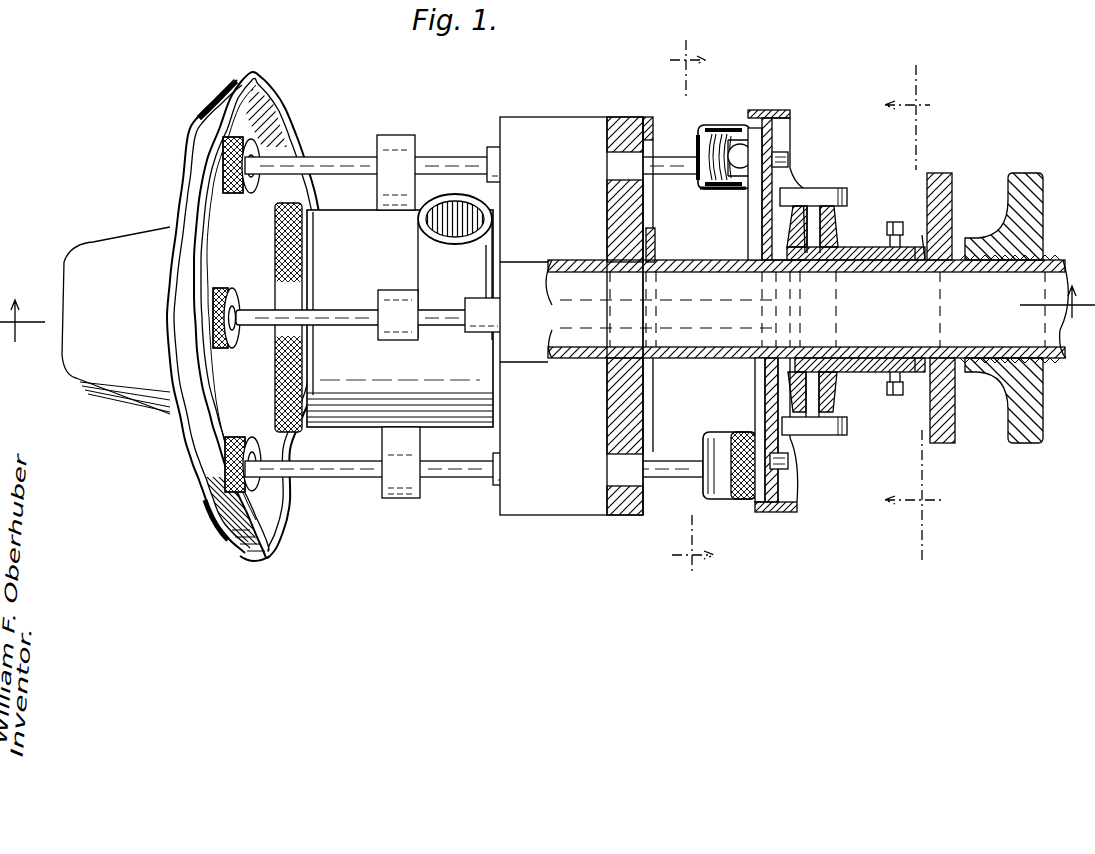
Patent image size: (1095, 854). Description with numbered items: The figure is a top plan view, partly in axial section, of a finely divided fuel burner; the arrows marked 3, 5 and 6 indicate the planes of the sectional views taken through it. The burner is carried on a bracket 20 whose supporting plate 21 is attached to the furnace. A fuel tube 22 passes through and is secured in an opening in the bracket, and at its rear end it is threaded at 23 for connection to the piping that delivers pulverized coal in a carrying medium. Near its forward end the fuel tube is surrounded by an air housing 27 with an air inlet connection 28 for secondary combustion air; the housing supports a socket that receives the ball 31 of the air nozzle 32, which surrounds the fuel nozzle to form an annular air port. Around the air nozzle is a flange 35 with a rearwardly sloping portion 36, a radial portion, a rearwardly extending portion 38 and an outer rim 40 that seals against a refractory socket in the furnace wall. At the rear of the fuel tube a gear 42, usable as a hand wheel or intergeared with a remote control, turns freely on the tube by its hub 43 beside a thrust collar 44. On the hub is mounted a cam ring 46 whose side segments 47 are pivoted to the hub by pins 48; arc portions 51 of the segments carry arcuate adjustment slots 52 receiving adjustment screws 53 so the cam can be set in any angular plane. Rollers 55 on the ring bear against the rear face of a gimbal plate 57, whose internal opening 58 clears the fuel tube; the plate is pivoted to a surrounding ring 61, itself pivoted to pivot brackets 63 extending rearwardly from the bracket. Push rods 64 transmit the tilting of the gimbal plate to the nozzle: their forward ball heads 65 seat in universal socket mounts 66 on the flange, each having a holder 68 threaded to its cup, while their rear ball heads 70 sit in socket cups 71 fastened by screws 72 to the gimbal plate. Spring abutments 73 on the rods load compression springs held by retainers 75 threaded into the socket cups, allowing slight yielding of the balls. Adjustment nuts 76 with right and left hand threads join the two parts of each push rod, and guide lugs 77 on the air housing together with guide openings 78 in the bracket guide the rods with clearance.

The section line 3- 3 is at (547, 324).
The section line 5- 5 is at (709, 307).
The section line 6- 6 is at (929, 312).
The bracket 20 is at (612, 122).
The supporting plate 21 is at (543, 120).
The fuel tube 22 is at (581, 262).
The threaded end 23 is at (1046, 258).
The air housing 27 is at (400, 318).
The air inlet connection 28 is at (492, 221).
The ball 31 is at (248, 284).
The air nozzle 32 is at (93, 244).
The flange 35 is at (200, 458).
The rearwardly sloping portion 36 is at (188, 420).
The rearwardly extending portion 38 is at (216, 532).
The outer rim 40 is at (250, 563).
The gear 42 is at (935, 176).
The hub 43 is at (899, 397).
The thrust collar 44 is at (1028, 444).
The ring 46 is at (836, 432).
The side segments 47 is at (838, 378).
The pins 48 is at (812, 252).
The arc portions 51 is at (864, 242).
The arcuate adjustment slots 52 is at (918, 232).
The adjustment screws 53 is at (880, 392).
The rollers 55 is at (822, 197).
The gimbal plate 57 is at (768, 391).
The internal opening 58 is at (766, 364).
The ring 61 is at (786, 513).
The pivot brackets 63 is at (680, 430).
The push rods 64 is at (330, 160).
The ball heads 65 is at (260, 168).
The universal socket mounts 66 is at (255, 140).
The holder 68 is at (274, 214).
The ball heads 70 is at (741, 144).
The socket cups 71 is at (756, 134).
The screws 72 is at (778, 146).
The spring abutments 73 is at (736, 188).
The retainers 75 is at (703, 131).
The adjustment nuts 76 is at (508, 162).
The guide lugs 77 is at (401, 500).
The guide openings 78 is at (647, 136).